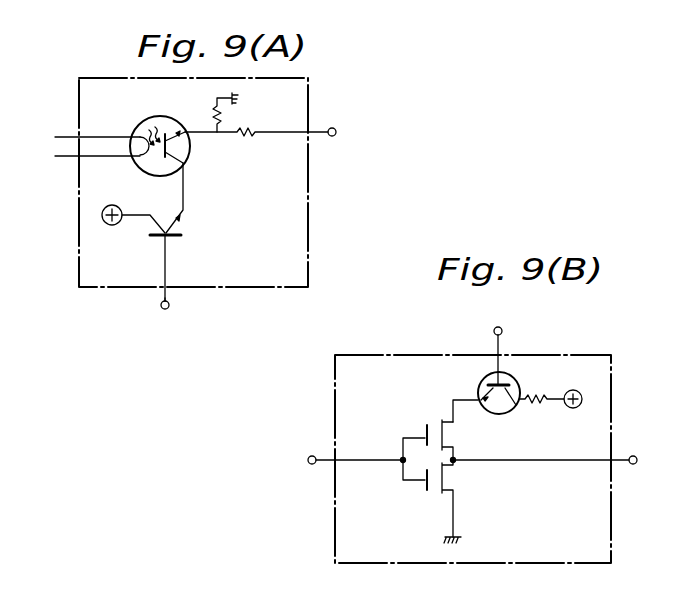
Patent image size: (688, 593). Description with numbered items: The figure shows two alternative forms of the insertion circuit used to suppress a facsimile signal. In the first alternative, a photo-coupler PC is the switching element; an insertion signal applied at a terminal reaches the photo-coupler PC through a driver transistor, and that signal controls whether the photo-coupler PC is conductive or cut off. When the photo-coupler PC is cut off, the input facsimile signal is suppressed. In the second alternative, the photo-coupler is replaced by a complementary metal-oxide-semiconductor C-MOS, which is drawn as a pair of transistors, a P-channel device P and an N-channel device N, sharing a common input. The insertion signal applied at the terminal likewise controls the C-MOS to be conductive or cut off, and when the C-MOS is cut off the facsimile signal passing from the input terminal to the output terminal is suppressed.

The photo-coupler PC is at (160, 132).
The complementary metal-oxide-semiconductor C-MOS is at (418, 490).
The P-channel MOS transistor P is at (455, 440).
The N-channel MOS transistor N is at (456, 498).